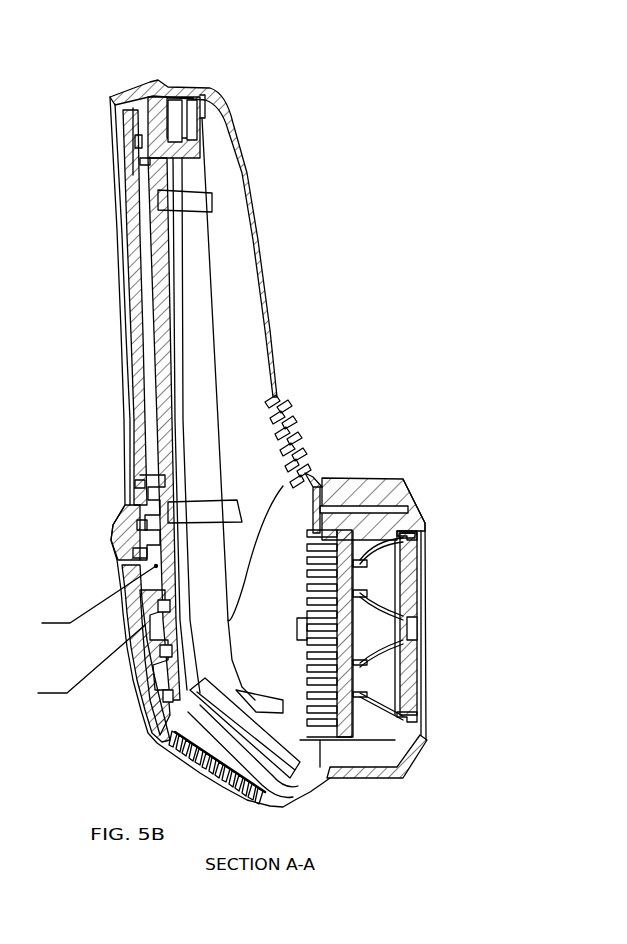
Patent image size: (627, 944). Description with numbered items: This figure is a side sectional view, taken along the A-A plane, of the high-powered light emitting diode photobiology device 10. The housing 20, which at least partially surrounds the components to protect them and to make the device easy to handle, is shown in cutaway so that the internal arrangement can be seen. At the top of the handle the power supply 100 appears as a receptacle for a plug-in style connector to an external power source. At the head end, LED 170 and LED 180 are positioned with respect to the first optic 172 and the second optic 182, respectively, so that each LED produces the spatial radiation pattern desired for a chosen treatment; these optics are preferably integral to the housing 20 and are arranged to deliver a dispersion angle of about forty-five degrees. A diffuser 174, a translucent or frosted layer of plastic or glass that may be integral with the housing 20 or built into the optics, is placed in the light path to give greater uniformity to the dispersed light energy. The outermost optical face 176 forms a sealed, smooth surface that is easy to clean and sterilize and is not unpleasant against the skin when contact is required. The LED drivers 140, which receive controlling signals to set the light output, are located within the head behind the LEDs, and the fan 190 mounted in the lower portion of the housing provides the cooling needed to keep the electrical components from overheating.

The high-powered light emitting diode (LED) photobiology device 10 is at (390, 267).
The housing 20 is at (253, 197).
The power supply 100 is at (162, 103).
The LED drivers 140 is at (342, 718).
The LED 170 is at (370, 570).
The first optic 172 is at (413, 530).
The diffuser 174 is at (407, 623).
The optical face 176 is at (427, 640).
The LED 180 is at (407, 718).
The second optic 182 is at (407, 535).
The fan 190 is at (290, 765).